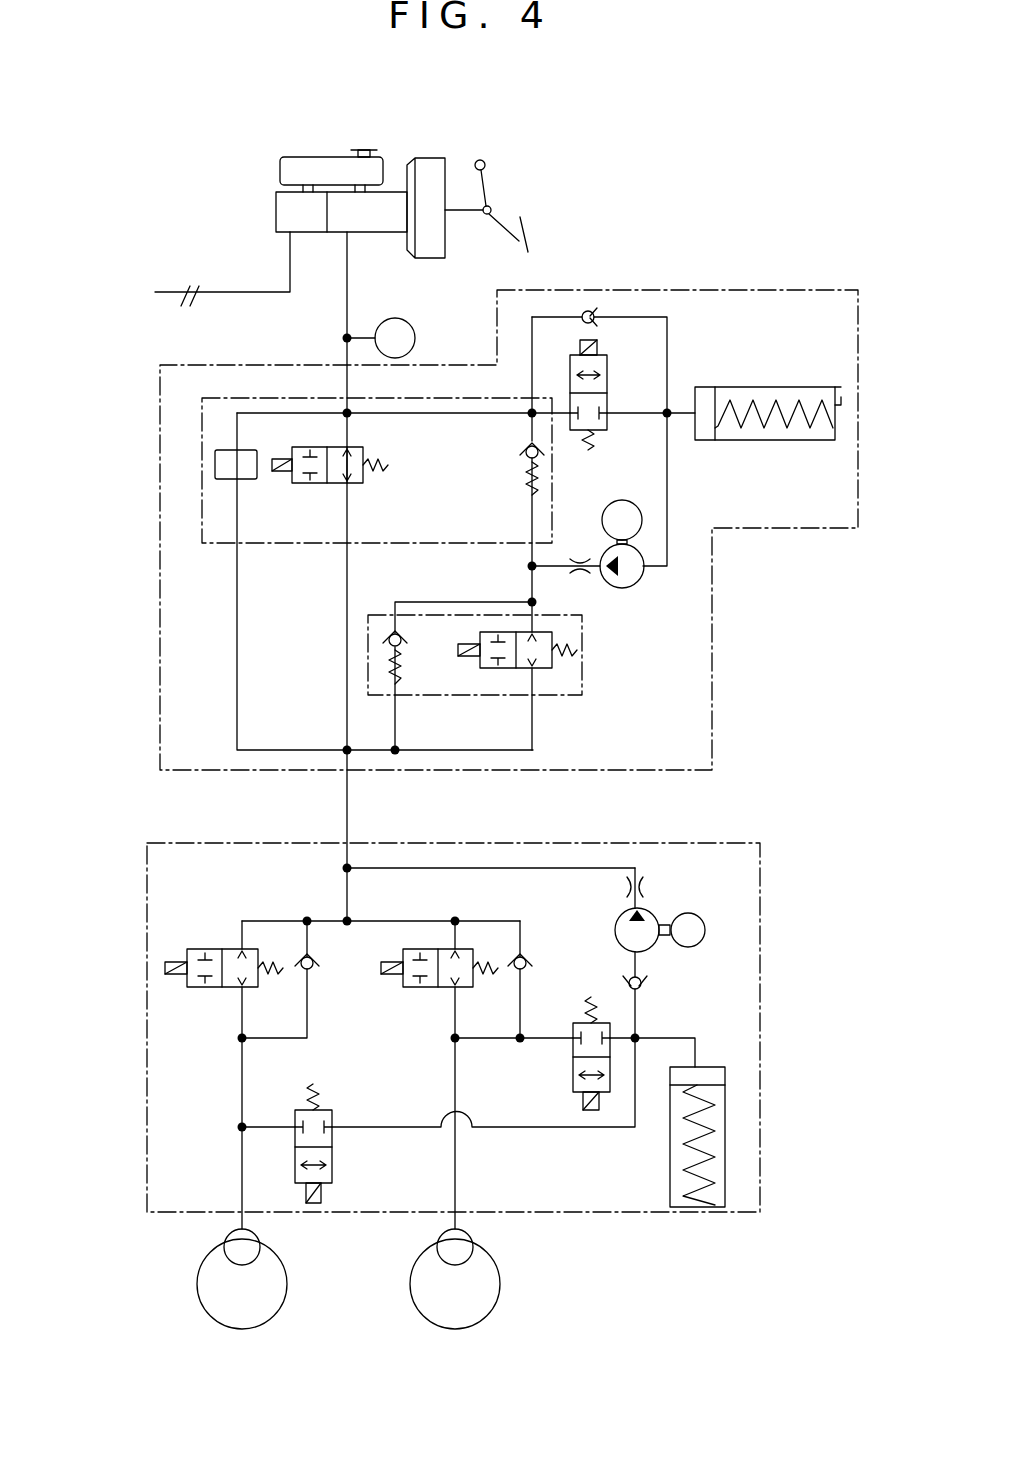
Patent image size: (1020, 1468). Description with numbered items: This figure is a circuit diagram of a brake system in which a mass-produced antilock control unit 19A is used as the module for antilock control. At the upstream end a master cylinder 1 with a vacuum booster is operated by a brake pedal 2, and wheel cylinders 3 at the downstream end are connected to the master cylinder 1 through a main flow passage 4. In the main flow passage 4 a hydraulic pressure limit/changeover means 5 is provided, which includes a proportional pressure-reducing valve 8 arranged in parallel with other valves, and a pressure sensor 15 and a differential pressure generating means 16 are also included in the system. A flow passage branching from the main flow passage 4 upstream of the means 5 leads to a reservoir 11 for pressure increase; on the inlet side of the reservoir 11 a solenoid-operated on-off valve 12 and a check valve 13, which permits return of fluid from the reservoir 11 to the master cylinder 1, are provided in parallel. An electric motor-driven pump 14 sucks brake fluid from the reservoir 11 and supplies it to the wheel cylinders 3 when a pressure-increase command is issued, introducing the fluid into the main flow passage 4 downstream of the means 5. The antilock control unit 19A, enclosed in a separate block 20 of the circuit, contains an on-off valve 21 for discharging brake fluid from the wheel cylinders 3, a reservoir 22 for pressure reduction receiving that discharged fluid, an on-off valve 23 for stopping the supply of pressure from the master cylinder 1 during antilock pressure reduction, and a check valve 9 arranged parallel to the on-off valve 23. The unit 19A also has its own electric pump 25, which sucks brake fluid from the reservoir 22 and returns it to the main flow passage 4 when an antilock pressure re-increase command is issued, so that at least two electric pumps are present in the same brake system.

The master cylinder 1 is at (290, 213).
The brake pedal 2 is at (502, 218).
The wheel cylinders 3 is at (262, 1240).
The main flow passage 4 is at (347, 283).
The hydraulic pressure limit/changeover means 5 is at (197, 460).
The proportional pressure-reducing valve 8 is at (257, 478).
The check valve 9 is at (312, 970).
The reservoir for pressure increase 11 is at (745, 388).
The solenoid-operated on-off valve 12 is at (600, 386).
The check valve 13 is at (595, 311).
The electric motor-driven pump 14 is at (626, 578).
The pressure sensor 15 is at (415, 331).
The differential pressure generating means 16 is at (355, 665).
The antilock control unit 19A is at (136, 1053).
The hydraulic pressure control unit 20 is at (745, 285).
The on-off valve 21 is at (573, 1065).
The reservoir for pressure reduction 22 is at (727, 1103).
The on-off valve 23 is at (210, 948).
The electric pump 25 is at (650, 917).